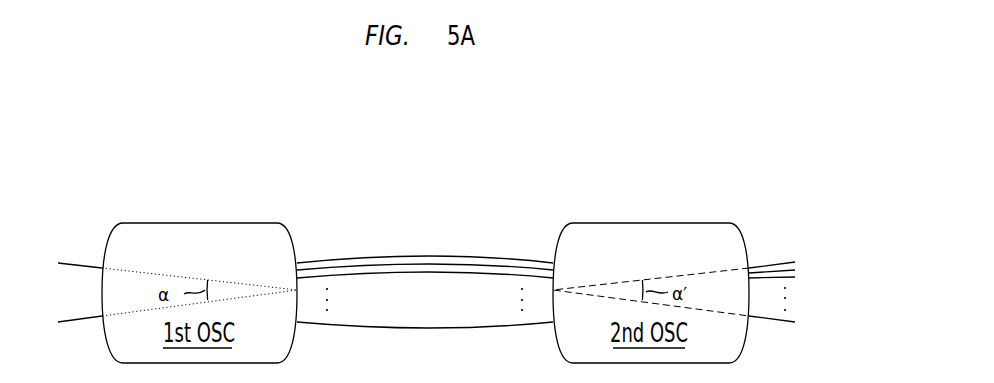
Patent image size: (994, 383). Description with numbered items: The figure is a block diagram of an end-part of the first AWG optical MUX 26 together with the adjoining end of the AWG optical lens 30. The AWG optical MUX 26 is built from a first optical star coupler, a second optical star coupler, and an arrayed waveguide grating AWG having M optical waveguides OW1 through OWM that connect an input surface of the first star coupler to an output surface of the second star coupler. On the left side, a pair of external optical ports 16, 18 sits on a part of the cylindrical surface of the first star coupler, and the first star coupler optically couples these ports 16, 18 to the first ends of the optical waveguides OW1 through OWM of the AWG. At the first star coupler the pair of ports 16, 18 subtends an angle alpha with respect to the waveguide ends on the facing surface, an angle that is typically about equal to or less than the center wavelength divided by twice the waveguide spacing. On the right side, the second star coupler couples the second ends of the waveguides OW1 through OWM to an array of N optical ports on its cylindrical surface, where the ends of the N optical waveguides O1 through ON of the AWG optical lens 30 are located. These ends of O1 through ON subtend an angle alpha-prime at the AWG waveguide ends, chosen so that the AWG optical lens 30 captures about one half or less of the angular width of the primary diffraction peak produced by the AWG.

The external optical port 16 is at (78, 262).
The external optical port 18 is at (78, 323).
The first AWG optical MUX 26 is at (589, 142).
The AWG optical lens 30 is at (834, 252).
The first optical waveguide of the AWG OW1 is at (352, 258).
The M-th optical waveguide of the AWG OWM is at (352, 327).
The arrayed waveguide grating AWG is at (490, 230).
The first optical waveguide of the AWG optical lens O1 is at (777, 260).
The N-th optical waveguide of the AWG optical lens ON is at (772, 323).